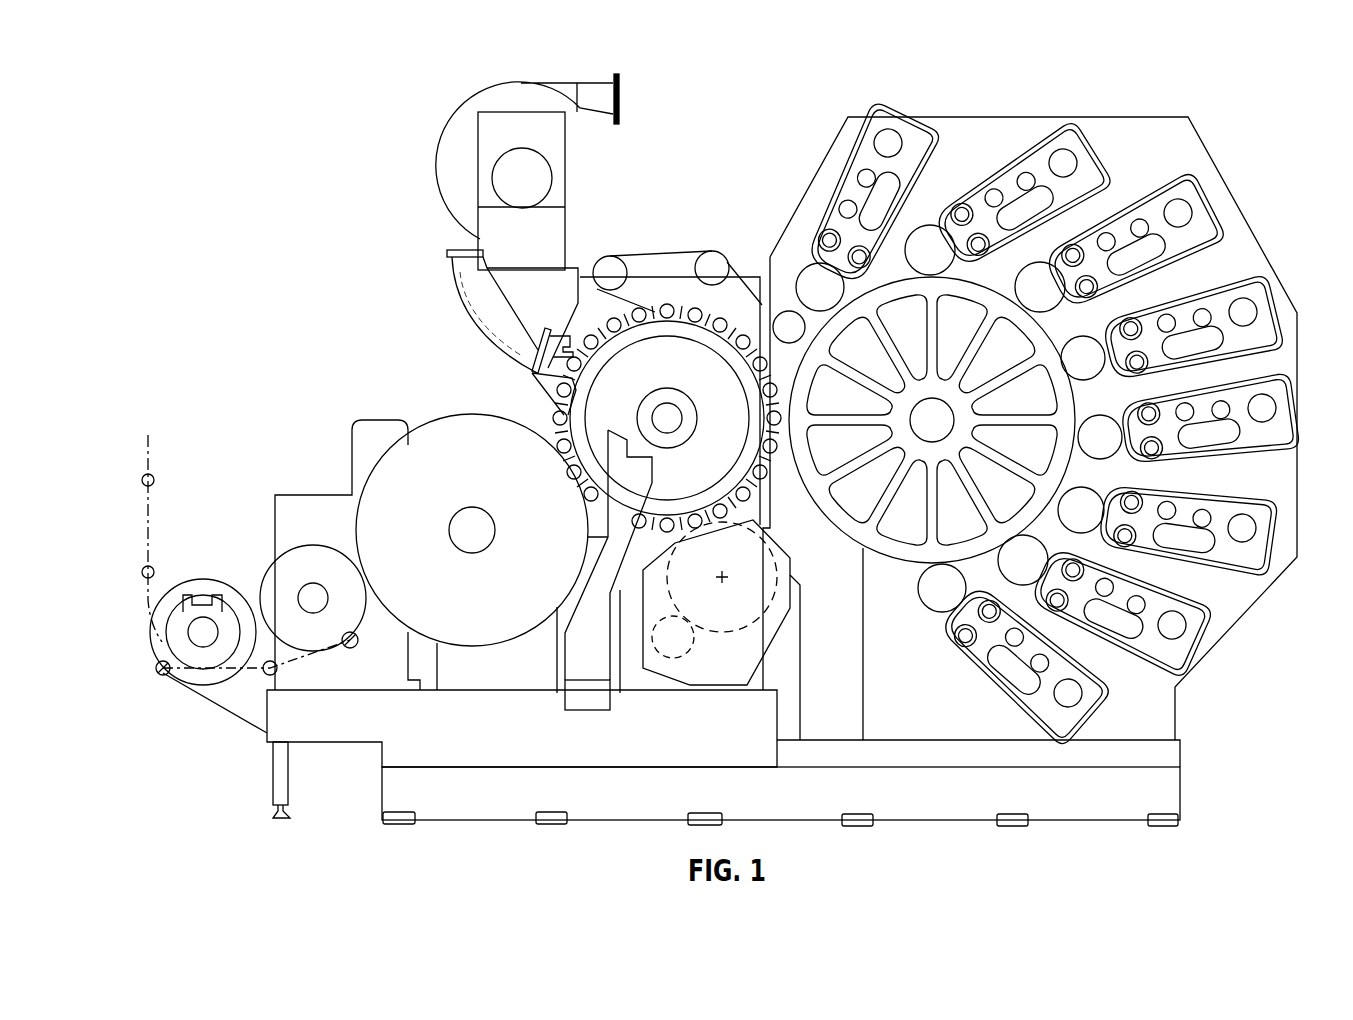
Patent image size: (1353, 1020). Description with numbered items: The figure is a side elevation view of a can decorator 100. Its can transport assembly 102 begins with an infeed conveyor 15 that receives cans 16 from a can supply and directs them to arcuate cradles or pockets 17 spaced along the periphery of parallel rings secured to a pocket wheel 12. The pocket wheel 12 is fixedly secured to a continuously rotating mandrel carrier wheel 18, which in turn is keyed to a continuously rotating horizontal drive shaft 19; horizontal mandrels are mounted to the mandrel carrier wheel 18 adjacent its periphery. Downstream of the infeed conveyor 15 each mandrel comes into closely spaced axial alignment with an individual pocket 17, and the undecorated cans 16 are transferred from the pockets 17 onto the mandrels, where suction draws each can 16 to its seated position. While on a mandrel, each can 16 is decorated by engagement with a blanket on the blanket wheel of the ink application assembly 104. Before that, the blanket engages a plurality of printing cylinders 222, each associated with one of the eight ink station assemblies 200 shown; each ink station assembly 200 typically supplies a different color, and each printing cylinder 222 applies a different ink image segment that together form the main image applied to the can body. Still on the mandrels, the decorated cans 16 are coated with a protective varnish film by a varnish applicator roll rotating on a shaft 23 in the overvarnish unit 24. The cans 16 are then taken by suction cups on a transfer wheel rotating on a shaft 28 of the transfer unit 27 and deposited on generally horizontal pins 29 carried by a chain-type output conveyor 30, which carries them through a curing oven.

The can decorator 100 is at (820, 117).
The can transport assembly 102 is at (450, 117).
The ink application assembly 104 is at (1181, 111).
The pocket wheel 12 is at (680, 357).
The infeed conveyor 15 is at (468, 251).
The can 16 is at (539, 413).
The pocket 17 is at (728, 308).
The mandrel carrier wheel 18 is at (597, 327).
The horizontal drive shaft 19 is at (672, 427).
The ink station assembly 200 is at (1232, 282).
The printing cylinder 222 is at (932, 238).
The shaft 23 is at (723, 588).
The overvarnish unit 24 is at (679, 691).
The transfer unit 27 is at (485, 623).
The shaft 28 is at (465, 521).
The pin 29 is at (346, 657).
The output conveyor 30 is at (353, 339).